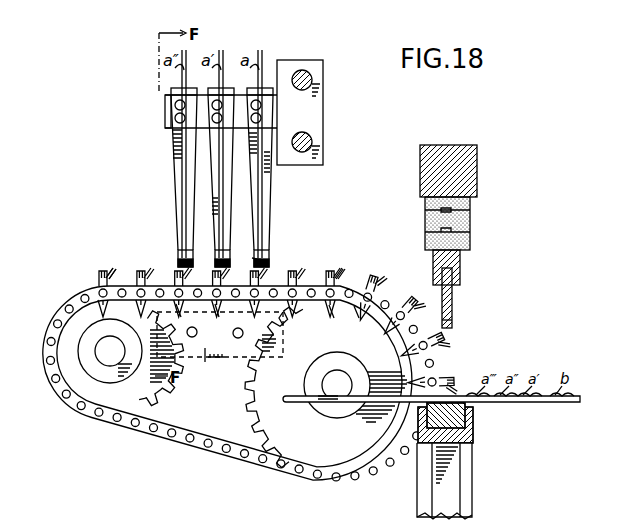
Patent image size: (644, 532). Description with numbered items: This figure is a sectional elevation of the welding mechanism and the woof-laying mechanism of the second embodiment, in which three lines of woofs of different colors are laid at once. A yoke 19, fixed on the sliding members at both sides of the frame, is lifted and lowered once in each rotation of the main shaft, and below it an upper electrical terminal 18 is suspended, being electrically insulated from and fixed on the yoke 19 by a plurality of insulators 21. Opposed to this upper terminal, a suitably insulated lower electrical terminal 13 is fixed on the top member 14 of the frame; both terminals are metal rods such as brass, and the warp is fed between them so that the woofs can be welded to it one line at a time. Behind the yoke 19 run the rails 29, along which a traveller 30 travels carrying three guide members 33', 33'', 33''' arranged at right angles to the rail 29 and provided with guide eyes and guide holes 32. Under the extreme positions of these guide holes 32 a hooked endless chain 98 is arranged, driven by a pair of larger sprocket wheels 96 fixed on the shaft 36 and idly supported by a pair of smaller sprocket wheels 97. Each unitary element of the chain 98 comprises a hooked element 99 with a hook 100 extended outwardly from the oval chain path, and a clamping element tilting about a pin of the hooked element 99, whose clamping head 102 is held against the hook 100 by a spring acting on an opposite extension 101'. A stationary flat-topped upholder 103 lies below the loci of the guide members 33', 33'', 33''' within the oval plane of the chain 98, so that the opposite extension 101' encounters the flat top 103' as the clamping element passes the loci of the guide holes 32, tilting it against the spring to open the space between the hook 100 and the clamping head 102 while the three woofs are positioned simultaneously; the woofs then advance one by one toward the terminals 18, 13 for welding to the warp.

The lower electrical terminal 13 is at (457, 421).
The top member 14 is at (473, 467).
The upper electrical terminal 18 is at (452, 312).
The yoke 19 is at (455, 148).
The insulators 21 is at (470, 232).
The rails 29 is at (312, 82).
The traveller 30 is at (320, 118).
The guide holes 32 is at (266, 262).
The guide member 33' is at (251, 158).
The guide member 33'' is at (212, 158).
The guide member 33''' is at (173, 158).
The shaft 36 is at (337, 385).
The sprocket wheels 96 is at (247, 423).
The sprocket wheels 97 is at (165, 378).
The hooked endless chain 98 is at (60, 318).
The hooked element 99 is at (372, 288).
The hook 100 is at (100, 284).
The opposite extension 101' is at (273, 324).
The clamping head 102 is at (127, 283).
The flat-topped upholder 103 is at (220, 346).
The flat top 103' is at (297, 326).